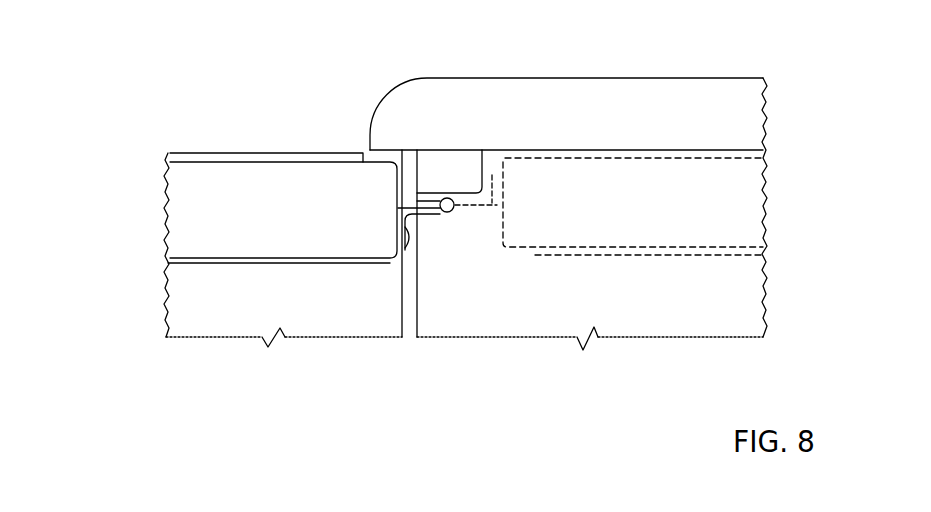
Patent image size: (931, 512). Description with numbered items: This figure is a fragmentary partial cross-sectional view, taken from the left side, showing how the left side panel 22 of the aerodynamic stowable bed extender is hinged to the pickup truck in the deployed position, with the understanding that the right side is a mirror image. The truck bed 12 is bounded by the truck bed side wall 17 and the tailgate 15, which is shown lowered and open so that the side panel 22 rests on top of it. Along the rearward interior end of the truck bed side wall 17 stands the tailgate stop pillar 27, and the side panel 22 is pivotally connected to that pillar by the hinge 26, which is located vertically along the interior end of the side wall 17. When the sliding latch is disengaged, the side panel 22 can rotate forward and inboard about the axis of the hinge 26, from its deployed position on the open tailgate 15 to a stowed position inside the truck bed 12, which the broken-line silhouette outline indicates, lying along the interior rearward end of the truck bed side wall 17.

The truck bed 12 is at (690, 282).
The tailgate 15 is at (198, 303).
The truck bed side wall 17 is at (547, 100).
The left side panel 22 is at (252, 150).
The hinge 26 is at (428, 218).
The tailgate stop pillar 27 is at (447, 172).